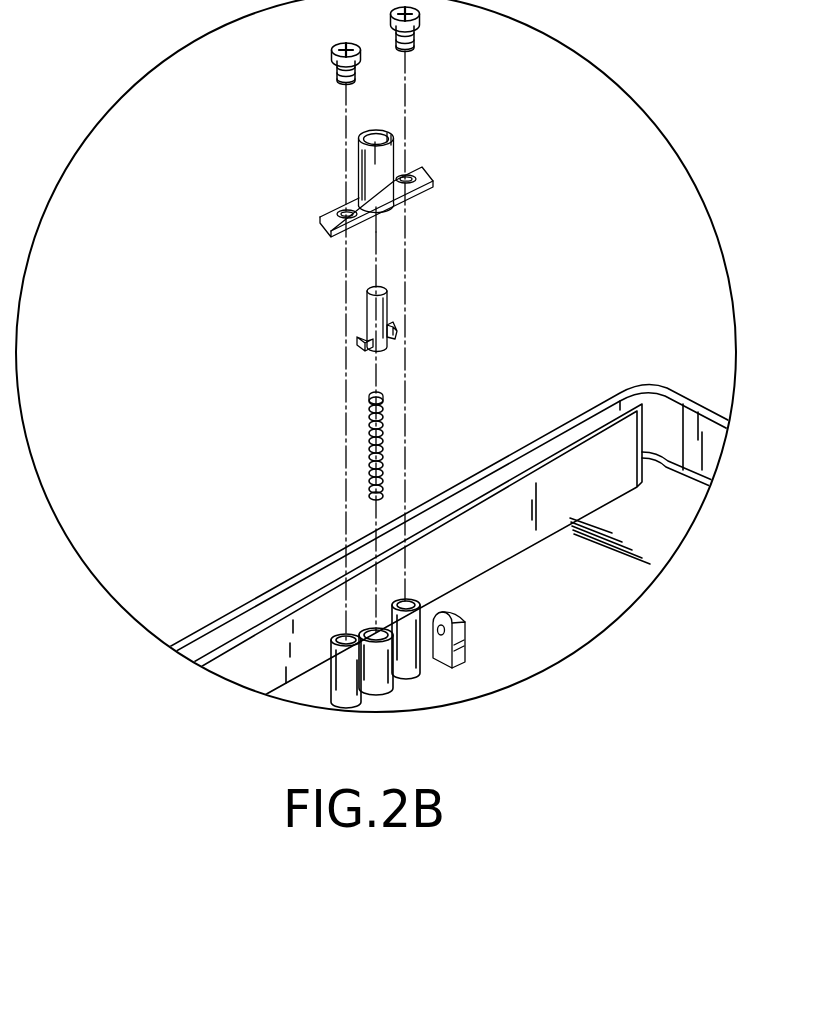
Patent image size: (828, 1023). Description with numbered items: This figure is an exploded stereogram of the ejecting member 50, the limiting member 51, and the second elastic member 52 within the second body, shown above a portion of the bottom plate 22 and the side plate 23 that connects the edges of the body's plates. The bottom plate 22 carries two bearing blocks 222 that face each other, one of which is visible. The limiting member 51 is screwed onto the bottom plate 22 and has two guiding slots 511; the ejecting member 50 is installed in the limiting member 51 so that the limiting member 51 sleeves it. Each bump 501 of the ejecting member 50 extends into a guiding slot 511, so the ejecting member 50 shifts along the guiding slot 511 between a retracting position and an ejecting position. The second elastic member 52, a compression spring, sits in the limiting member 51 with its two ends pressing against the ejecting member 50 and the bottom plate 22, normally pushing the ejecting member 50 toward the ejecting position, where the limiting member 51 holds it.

The bottom plate 22 is at (600, 602).
The bearing block 222 is at (463, 616).
The side plate 23 is at (584, 428).
The ejecting member 50 is at (387, 303).
The bump 501 is at (396, 330).
The limiting member 51 is at (422, 172).
The guiding slot 511 is at (362, 186).
The second elastic member 52 is at (383, 434).